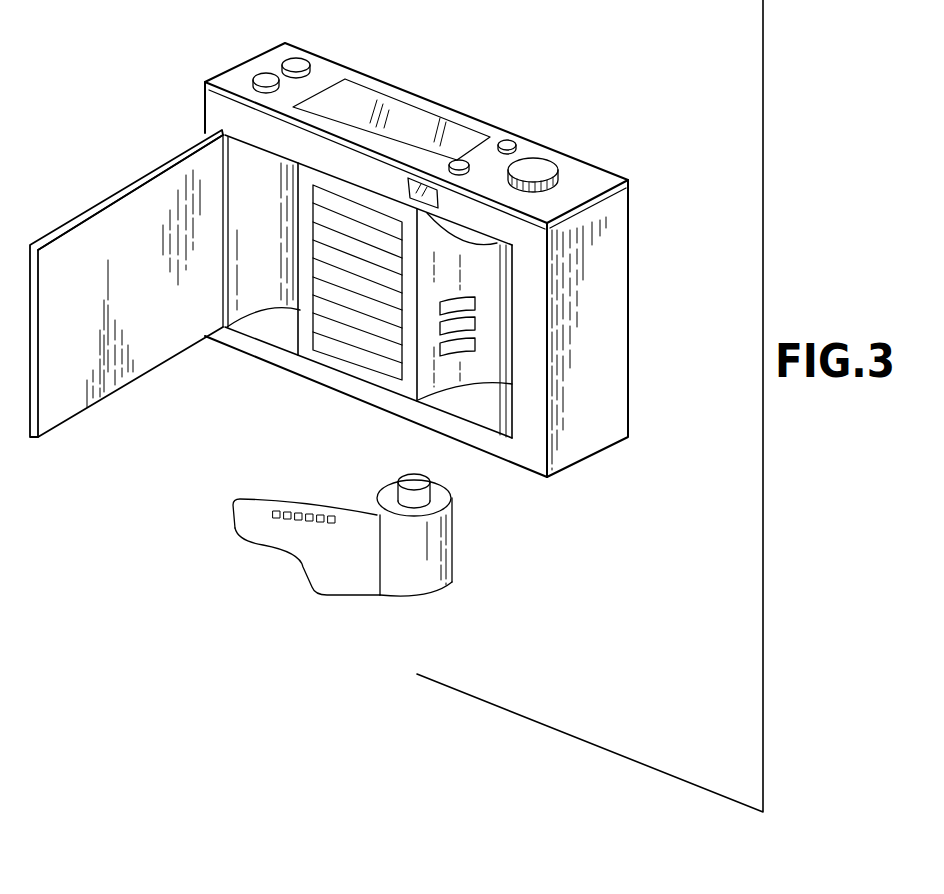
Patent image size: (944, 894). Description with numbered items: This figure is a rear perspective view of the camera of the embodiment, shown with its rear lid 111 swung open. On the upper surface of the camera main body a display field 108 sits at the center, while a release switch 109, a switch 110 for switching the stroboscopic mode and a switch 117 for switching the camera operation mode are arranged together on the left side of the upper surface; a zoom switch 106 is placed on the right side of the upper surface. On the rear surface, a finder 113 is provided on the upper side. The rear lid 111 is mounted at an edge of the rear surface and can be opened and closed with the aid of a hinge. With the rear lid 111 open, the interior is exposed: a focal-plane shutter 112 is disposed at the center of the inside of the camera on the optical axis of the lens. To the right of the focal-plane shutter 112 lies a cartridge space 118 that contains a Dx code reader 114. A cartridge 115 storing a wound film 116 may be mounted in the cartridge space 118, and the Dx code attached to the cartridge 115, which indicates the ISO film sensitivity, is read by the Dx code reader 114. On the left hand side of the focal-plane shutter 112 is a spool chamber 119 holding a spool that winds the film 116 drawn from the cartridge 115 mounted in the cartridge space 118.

The zoom switch 106 is at (292, 58).
The display field 108 is at (360, 103).
The release switch 109 is at (533, 167).
The switch for switching the stroboscopic mode 110 is at (461, 160).
The rear lid 111 is at (87, 232).
The focal-plane shutter 112 is at (348, 350).
The finder 113 is at (425, 200).
The Dx code reader 114 is at (467, 305).
The cartridge 115 is at (437, 548).
The film 116 is at (267, 542).
The switch for switching the camera operation mode 117 is at (505, 140).
The cartridge space 118 is at (495, 413).
The spool chamber 119 is at (250, 217).